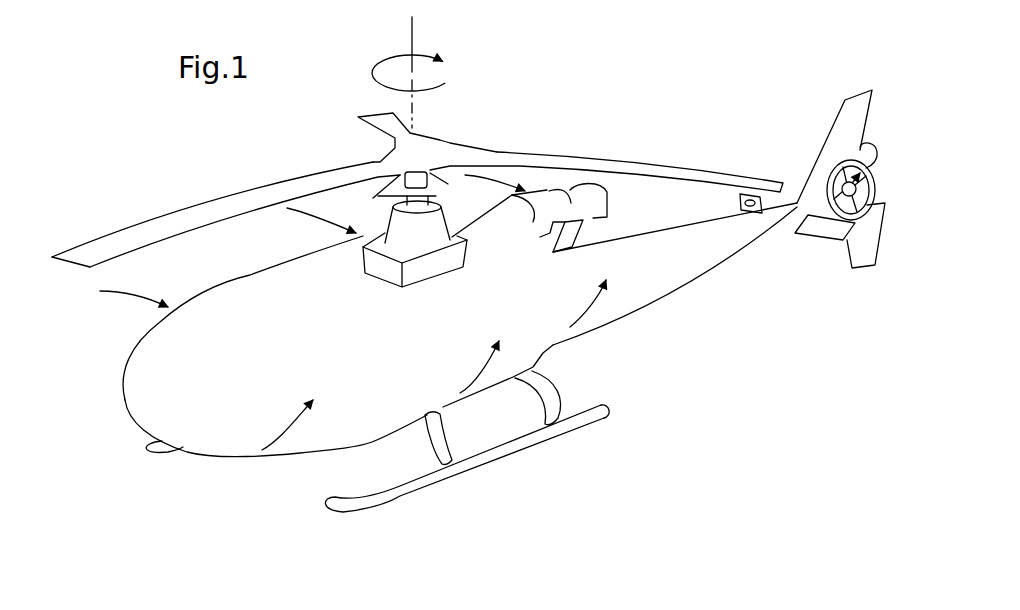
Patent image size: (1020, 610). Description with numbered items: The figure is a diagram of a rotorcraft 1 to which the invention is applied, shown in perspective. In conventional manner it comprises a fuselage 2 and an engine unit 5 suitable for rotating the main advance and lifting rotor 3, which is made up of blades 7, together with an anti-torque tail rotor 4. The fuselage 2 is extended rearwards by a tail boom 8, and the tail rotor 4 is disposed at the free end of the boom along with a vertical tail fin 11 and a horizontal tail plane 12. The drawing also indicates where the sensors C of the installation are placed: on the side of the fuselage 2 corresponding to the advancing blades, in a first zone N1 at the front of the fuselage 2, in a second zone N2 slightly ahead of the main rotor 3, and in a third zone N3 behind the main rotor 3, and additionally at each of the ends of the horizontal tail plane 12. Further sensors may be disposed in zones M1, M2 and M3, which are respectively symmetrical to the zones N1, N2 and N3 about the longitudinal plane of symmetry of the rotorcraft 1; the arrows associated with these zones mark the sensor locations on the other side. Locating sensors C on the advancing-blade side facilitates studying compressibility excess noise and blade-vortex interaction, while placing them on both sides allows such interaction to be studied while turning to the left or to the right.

The rotorcraft 1 is at (128, 336).
The fuselage 2 is at (284, 291).
The main advance and lifting rotor 3 is at (448, 124).
The anti-torque tail rotor 4 is at (862, 141).
The engine unit 5 is at (558, 193).
The blades 7 is at (695, 172).
The tail boom 8 is at (667, 287).
The vertical tail fin 11 is at (845, 113).
The horizontal tail plane 12 is at (833, 227).
The sensors C is at (758, 212).
The zone M1 is at (134, 285).
The zone M2 is at (309, 227).
The zone M3 is at (487, 190).
The first zone N1 is at (273, 425).
The second zone N2 is at (458, 367).
The third zone N3 is at (559, 299).